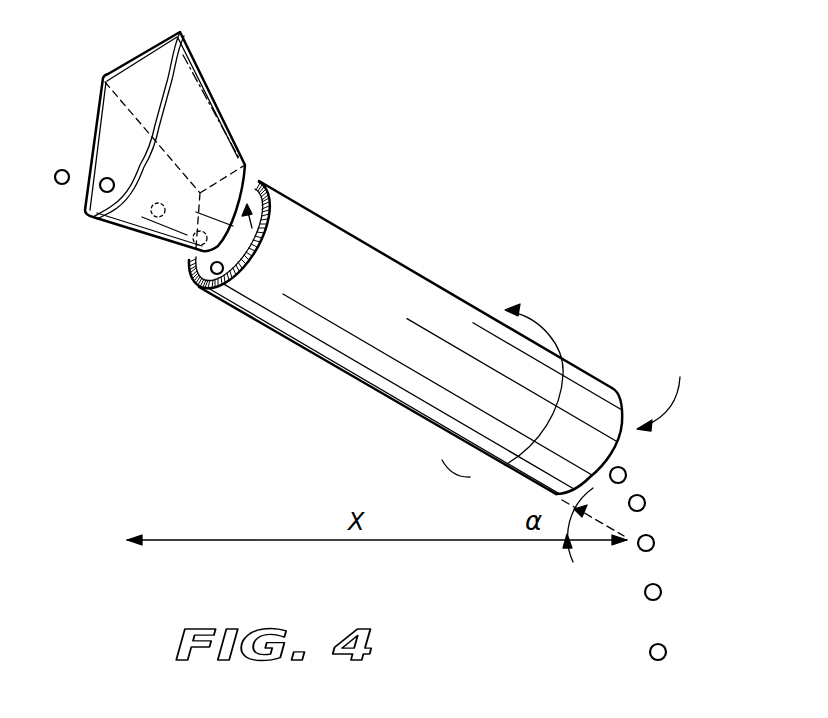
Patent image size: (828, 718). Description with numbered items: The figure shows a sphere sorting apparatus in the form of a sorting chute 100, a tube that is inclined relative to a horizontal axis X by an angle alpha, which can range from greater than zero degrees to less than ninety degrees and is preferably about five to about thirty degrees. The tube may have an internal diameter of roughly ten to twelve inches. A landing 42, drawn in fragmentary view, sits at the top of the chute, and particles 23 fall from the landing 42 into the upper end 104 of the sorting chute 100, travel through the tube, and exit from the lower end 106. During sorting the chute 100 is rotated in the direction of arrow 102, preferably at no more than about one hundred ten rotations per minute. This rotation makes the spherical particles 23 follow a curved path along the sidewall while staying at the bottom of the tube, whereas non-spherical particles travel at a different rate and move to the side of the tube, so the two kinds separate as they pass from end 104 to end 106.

The particles 23 is at (100, 184).
The landing 42 is at (122, 238).
The sorting chute 100 is at (347, 229).
The arrow 102 is at (557, 323).
The upper end 104 is at (262, 181).
The lower end 106 is at (674, 386).